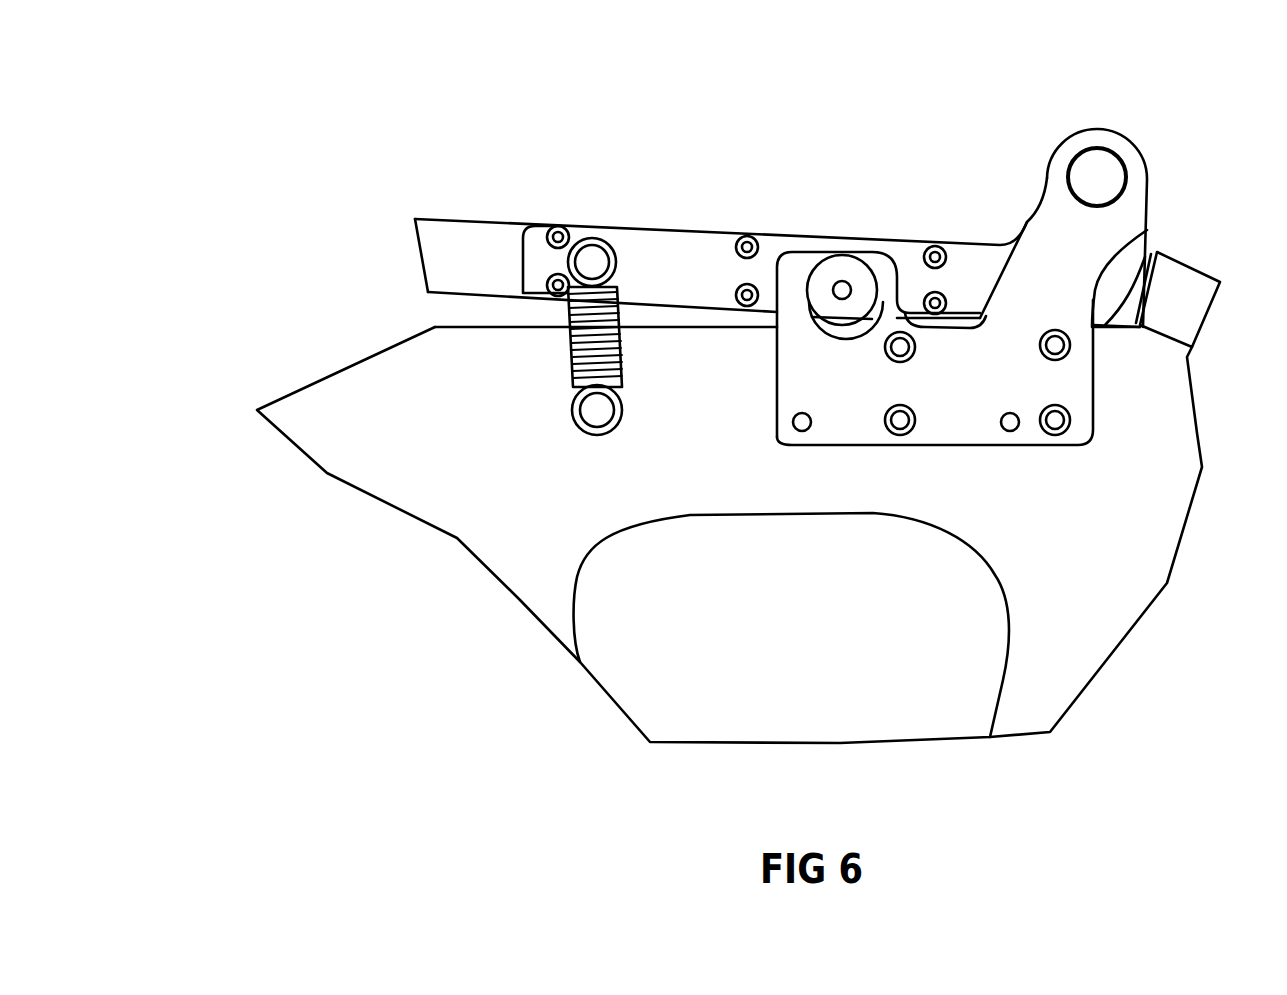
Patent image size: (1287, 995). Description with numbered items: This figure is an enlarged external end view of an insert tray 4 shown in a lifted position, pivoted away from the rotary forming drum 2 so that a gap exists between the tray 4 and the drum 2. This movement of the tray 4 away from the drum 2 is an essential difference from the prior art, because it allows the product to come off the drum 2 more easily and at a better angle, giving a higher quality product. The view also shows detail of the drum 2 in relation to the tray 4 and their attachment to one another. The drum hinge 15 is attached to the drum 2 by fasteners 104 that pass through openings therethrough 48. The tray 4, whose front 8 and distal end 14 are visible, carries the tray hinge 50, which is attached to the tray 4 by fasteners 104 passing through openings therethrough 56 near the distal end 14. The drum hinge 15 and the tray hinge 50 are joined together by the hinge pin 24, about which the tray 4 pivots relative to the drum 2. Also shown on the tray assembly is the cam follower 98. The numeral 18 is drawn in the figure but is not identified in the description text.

The rotary forming drum 2 is at (373, 413).
The insert tray 4 is at (453, 238).
The front 8 is at (418, 243).
The distal end 14 is at (433, 282).
The drum hinge 15 is at (1070, 268).
The lever arm 18 is at (1098, 135).
The hinge pin 24 is at (1105, 173).
The openings therethrough 48 is at (1058, 433).
The tray hinge 50 is at (967, 258).
The openings therethrough 56 is at (935, 246).
The cam follower 98 is at (843, 262).
The fasteners 104 is at (905, 432).